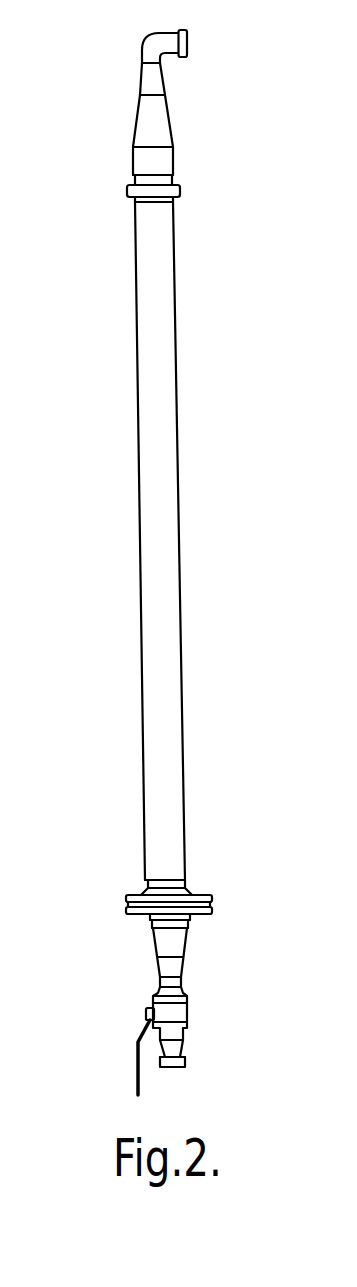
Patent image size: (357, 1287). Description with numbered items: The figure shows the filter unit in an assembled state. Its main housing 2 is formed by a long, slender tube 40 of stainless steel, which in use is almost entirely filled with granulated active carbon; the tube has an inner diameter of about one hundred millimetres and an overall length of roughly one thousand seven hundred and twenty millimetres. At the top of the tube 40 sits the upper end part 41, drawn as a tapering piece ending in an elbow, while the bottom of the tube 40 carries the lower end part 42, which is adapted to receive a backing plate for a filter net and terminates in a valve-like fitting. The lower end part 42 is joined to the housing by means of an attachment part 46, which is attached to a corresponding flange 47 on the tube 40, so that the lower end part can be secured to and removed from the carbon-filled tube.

The main housing 2 is at (154, 562).
The tube 40 is at (138, 447).
The upper end part 41 is at (173, 135).
The lower end part 42 is at (183, 975).
The attachment part 46 is at (199, 891).
The flange 47 is at (201, 896).